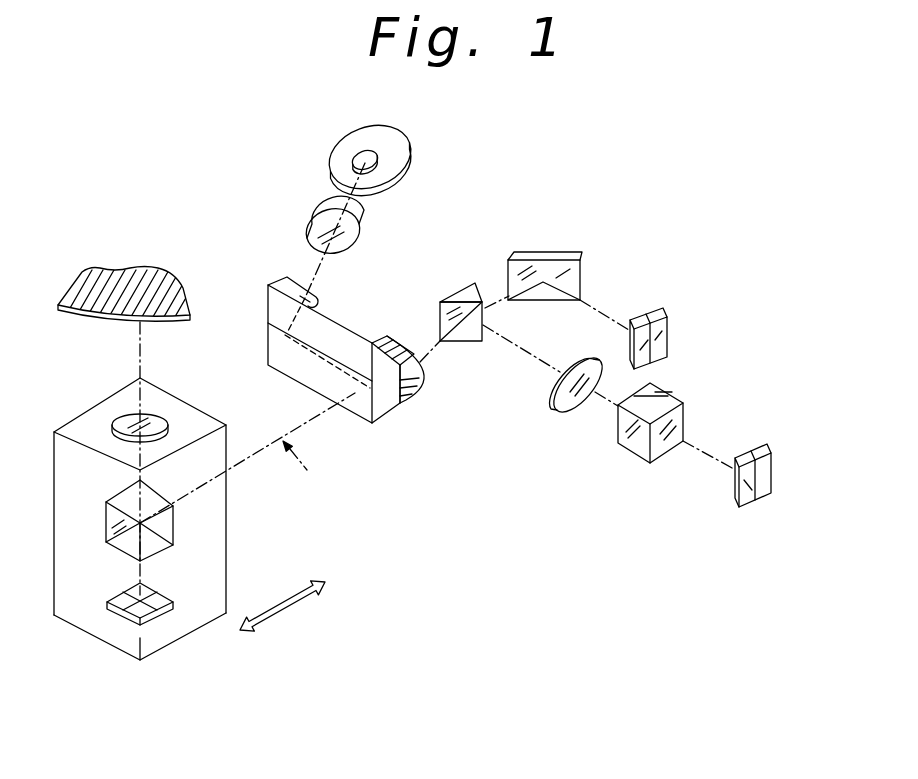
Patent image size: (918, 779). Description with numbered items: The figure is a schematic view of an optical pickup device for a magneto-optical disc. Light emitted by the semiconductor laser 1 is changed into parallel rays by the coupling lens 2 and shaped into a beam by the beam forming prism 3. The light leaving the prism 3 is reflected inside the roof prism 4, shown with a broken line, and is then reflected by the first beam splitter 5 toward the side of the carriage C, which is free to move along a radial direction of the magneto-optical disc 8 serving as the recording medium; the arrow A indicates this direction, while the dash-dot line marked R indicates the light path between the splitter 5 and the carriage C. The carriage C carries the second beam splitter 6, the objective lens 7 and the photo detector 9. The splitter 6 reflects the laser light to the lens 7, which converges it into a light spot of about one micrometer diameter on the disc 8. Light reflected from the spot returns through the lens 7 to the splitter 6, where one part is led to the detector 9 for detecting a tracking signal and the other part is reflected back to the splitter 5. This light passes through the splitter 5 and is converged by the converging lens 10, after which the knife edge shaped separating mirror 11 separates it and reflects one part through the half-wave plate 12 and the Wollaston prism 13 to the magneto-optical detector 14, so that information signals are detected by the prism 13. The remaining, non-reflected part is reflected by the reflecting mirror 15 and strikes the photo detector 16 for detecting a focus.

The semiconductor laser 1 is at (404, 160).
The coupling lens 2 is at (356, 232).
The beam forming prism 3 is at (280, 287).
The roof prism 4 is at (272, 349).
The first beam splitter 5 is at (386, 356).
The second beam splitter 6 is at (173, 522).
The objective lens 7 is at (160, 418).
The magneto-optical disc 8 is at (72, 310).
The photo detector 9 is at (118, 618).
The converging lens 10 is at (423, 384).
The knife edge shaped separating mirror 11 is at (464, 292).
The half-wave plate 12 is at (565, 410).
The Wollaston prism 13 is at (677, 396).
The magneto-optical detector 14 is at (767, 475).
The reflecting mirror 15 is at (577, 273).
The photo detector 16 is at (663, 327).
The carriage C is at (183, 630).
The reflected light beam R is at (308, 468).
The movement direction arrow A is at (300, 607).